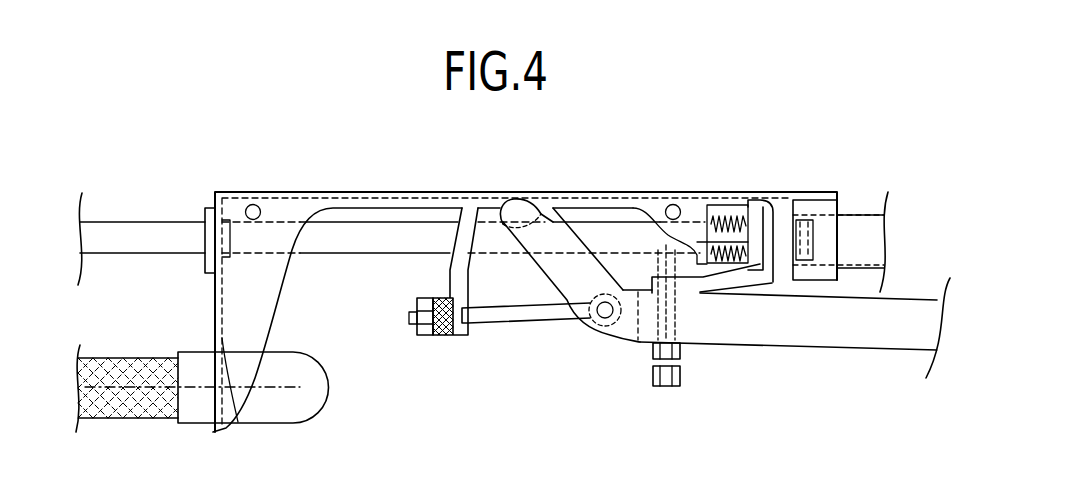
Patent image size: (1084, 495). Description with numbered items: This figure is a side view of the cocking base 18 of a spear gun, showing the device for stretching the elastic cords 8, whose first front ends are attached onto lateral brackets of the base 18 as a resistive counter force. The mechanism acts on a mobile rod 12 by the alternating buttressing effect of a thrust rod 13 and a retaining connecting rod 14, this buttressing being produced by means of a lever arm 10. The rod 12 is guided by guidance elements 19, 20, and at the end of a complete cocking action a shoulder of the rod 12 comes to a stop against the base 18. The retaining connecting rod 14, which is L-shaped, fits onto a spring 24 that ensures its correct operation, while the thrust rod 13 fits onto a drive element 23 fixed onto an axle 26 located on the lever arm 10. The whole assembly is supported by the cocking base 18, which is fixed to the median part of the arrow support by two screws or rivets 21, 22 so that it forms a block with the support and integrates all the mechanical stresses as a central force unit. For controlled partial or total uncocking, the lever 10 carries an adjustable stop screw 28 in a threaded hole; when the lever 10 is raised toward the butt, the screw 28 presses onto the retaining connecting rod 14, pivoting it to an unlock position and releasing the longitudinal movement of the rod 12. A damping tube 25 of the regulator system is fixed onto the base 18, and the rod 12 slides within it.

The elastic cords 8 is at (312, 386).
The lever arm 10 is at (850, 327).
The rod 12 is at (158, 237).
The thrust rod 13 is at (467, 285).
The retaining connecting rod 14 is at (747, 277).
The cocking base 18 is at (262, 283).
The guidance element 19 is at (722, 212).
The guidance element 20 is at (206, 207).
The screw or rivet 21 is at (252, 205).
The screw or rivet 22 is at (673, 204).
The drive element 23 is at (530, 312).
The spring 24 is at (738, 212).
The damping tube 25 is at (875, 216).
The axle 26 is at (607, 325).
The adjustable stop screw 28 is at (678, 362).